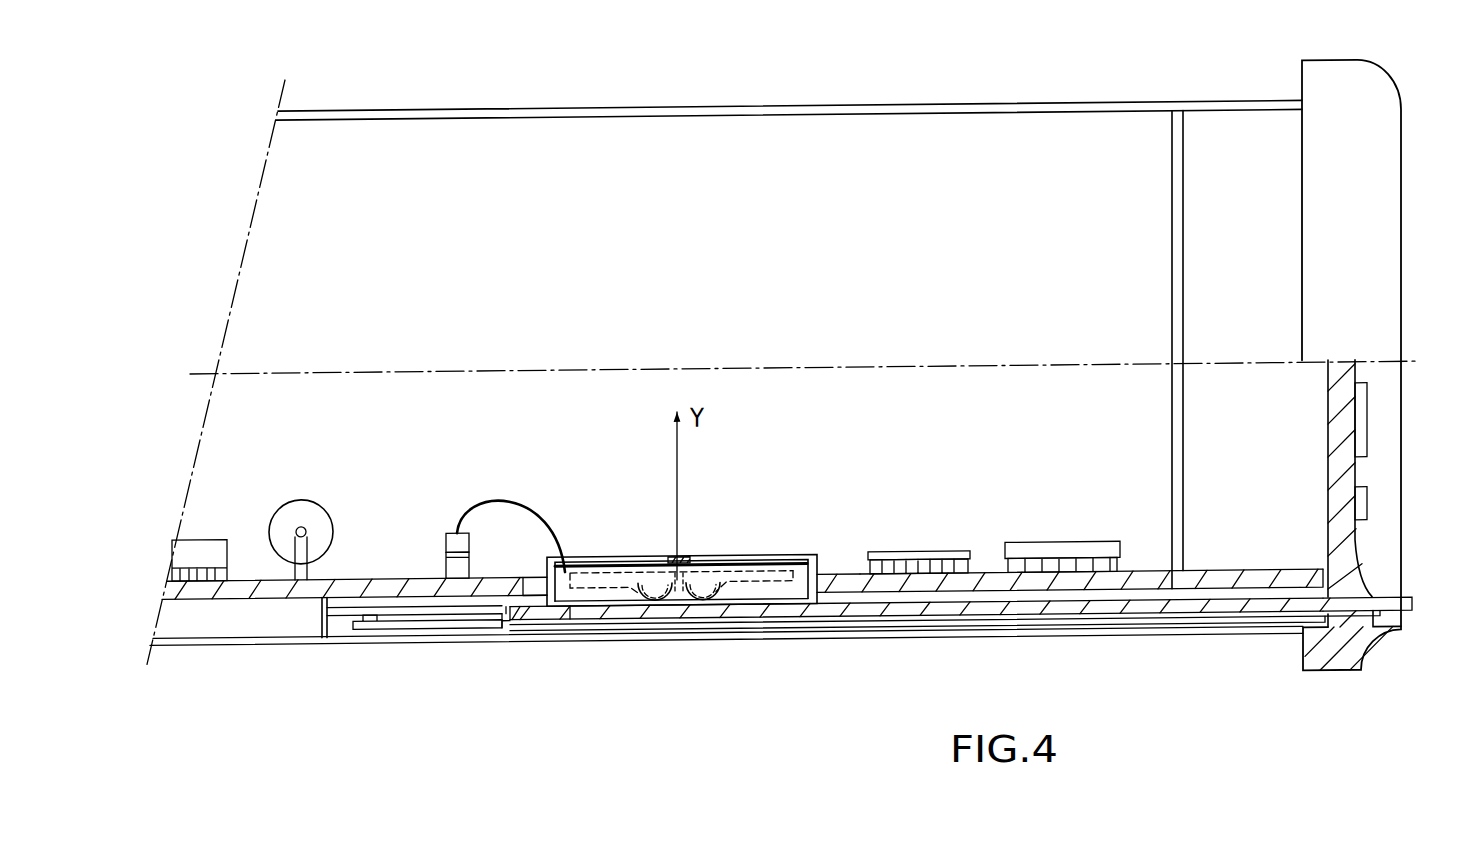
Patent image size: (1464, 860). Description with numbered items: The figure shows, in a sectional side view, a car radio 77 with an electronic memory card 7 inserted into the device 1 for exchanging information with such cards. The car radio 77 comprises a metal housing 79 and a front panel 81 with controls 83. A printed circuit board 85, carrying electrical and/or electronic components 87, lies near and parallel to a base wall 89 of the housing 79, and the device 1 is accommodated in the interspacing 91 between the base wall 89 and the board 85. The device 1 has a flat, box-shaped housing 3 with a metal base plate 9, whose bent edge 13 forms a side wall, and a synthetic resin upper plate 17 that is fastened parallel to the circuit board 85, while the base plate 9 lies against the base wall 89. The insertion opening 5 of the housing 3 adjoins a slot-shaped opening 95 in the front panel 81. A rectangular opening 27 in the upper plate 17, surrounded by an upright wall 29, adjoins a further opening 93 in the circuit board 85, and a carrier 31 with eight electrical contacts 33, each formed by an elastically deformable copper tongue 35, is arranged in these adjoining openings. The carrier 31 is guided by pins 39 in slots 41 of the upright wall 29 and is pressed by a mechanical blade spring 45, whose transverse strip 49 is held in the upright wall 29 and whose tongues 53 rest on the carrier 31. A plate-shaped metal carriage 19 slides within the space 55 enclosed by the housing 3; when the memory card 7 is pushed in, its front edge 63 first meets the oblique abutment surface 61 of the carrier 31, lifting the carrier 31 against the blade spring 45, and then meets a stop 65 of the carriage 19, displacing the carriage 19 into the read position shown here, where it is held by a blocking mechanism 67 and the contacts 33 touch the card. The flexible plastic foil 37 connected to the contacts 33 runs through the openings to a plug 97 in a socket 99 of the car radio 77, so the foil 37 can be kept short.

The device 1 is at (580, 653).
The housing 3 is at (1185, 592).
The insertion opening 5 is at (1313, 606).
The electronic memory card 7 is at (1052, 626).
The base plate 9 is at (939, 637).
The bent edge 13 is at (320, 623).
The upper plate 17 is at (387, 607).
The carriage 19 is at (1143, 631).
The rectangular opening 27 is at (797, 565).
The upright wall 29 is at (818, 568).
The carrier 31 is at (652, 592).
The electrical contacts 33 is at (703, 614).
The copper tongue 35 is at (720, 638).
The flexible plastic foil 37 is at (496, 520).
The pins 39 is at (713, 565).
The slots 41 is at (662, 614).
The mechanical blade spring 45 is at (583, 561).
The transverse strip 49 is at (683, 565).
The tongues 53 is at (760, 568).
The space 55 is at (984, 612).
The abutment surface 61 is at (790, 608).
The front edge 63 is at (520, 623).
The stop 65 is at (500, 625).
The blocking mechanism 67 is at (372, 639).
The car radio 77 is at (1180, 100).
The metal housing 79 is at (686, 113).
The front panel 81 is at (1382, 267).
The controls 83 is at (1362, 437).
The printed circuit board 85 is at (350, 590).
The electrical and/or electronic components 87 is at (305, 504).
The base wall 89 is at (1095, 644).
The interspacing 91 is at (197, 630).
The further opening 93 is at (536, 596).
The slot-shaped opening 95 is at (1358, 607).
The plug 97 is at (440, 545).
The socket 99 is at (457, 540).